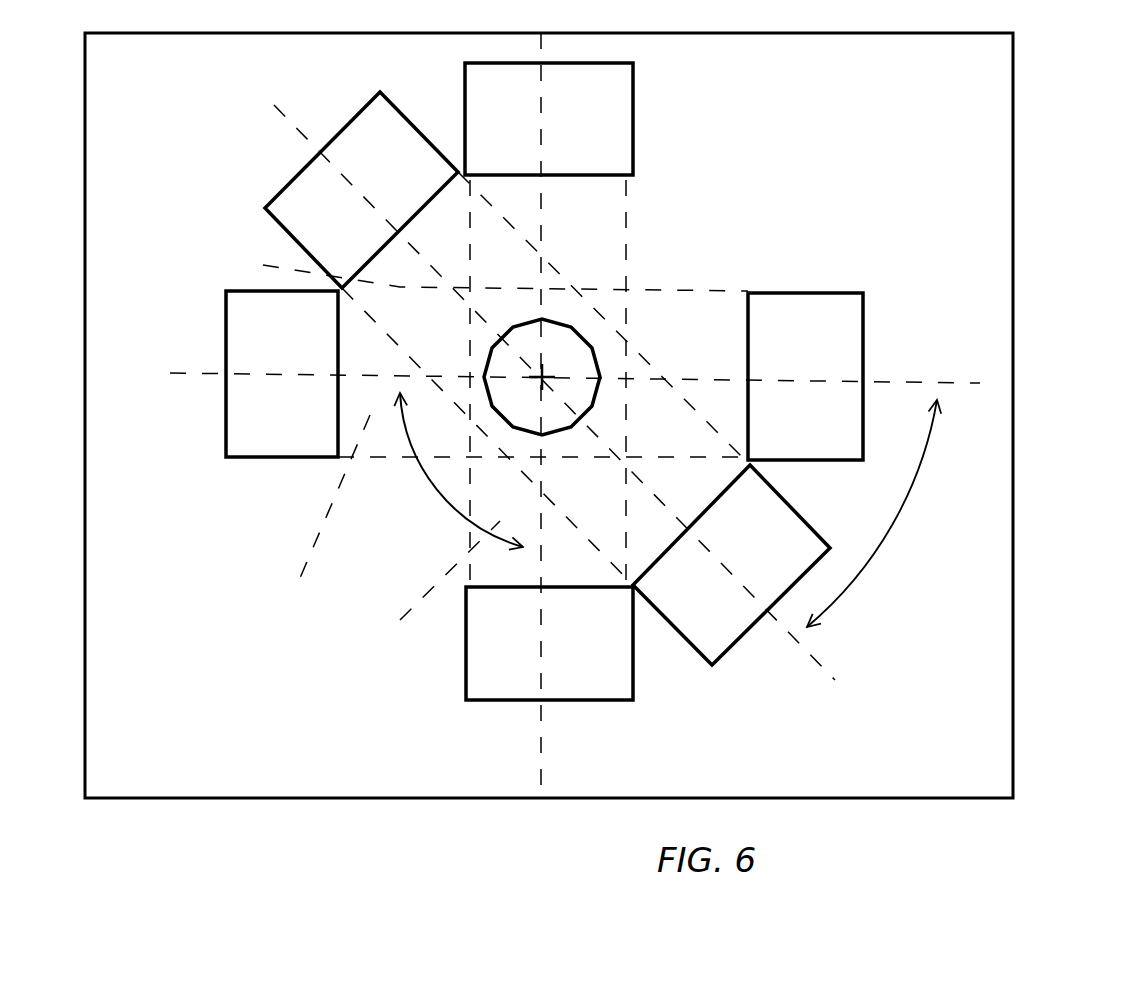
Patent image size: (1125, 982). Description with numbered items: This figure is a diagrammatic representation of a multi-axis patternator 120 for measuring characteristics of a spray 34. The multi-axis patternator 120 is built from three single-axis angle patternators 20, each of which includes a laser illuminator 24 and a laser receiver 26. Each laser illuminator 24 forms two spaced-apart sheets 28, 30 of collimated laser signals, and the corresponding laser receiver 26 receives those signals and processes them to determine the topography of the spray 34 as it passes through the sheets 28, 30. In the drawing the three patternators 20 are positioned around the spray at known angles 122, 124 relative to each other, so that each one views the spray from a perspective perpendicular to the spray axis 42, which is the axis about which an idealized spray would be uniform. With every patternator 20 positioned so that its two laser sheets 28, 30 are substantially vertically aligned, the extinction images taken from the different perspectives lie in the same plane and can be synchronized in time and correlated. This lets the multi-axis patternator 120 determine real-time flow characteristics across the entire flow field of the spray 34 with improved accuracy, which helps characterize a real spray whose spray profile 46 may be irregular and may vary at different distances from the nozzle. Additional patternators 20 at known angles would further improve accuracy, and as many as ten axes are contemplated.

The multi-axis patternator 120 is at (1023, 133).
The known angle 122 is at (888, 532).
The known angle 124 is at (428, 482).
The angle patternator 20 is at (652, 213).
The laser illuminator 24 is at (397, 108).
The laser receiver 26 is at (830, 293).
The sheet 28 is at (469, 422).
The sheet 30 is at (530, 392).
The spray 34 is at (572, 340).
The axis 42 is at (558, 368).
The spray profile 46 is at (603, 365).